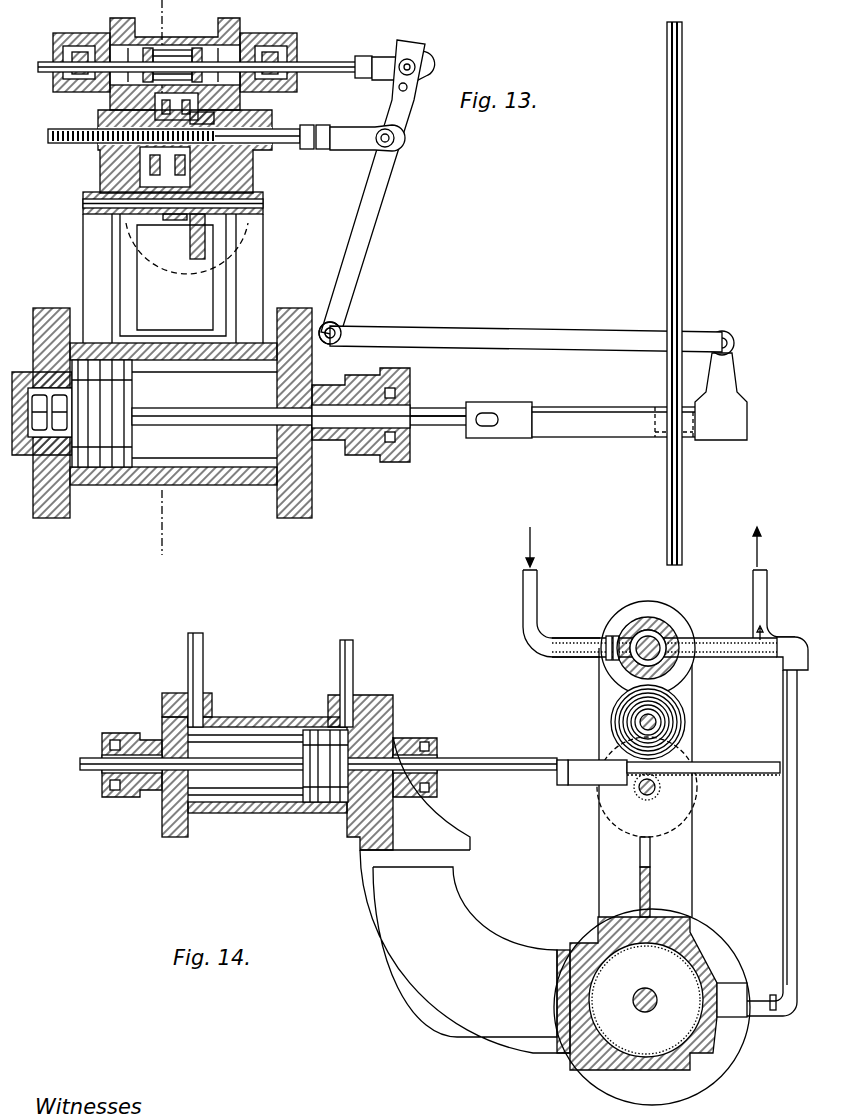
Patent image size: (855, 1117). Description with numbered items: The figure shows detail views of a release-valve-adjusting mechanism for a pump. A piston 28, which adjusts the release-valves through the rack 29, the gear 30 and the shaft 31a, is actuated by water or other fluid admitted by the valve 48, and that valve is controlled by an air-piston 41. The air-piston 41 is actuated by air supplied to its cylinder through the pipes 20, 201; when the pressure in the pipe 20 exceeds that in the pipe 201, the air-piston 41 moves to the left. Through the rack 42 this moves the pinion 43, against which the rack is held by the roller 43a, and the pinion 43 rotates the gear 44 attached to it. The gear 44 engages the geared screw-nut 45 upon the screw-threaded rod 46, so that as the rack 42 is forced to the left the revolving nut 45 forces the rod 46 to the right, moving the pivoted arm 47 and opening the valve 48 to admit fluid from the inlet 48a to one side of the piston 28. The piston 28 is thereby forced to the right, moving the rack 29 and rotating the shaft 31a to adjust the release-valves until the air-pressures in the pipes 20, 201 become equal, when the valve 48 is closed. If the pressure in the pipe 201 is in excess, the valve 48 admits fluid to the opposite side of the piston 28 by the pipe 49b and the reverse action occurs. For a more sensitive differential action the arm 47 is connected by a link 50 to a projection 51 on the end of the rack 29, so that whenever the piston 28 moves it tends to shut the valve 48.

In FIG. 13, the valve 48 is at (178, 45).
In FIG. 14, the valve 48 is at (668, 636).
In FIG. 13, the geared screw-nut 45 is at (212, 118).
In FIG. 13, the roller 43a is at (163, 165).
In FIG. 14, the roller 43a is at (687, 722).
In FIG. 13, the screw-threaded rod 46 is at (296, 150).
In FIG. 14, the screw-threaded rod 46 is at (640, 721).
In FIG. 13, the pinion 43 is at (176, 220).
In FIG. 14, the pinion 43 is at (633, 788).
In FIG. 13, the gear 44 is at (206, 250).
In FIG. 14, the gear 44 is at (665, 823).
In FIG. 13, the pivoted arm 47 is at (352, 263).
In FIG. 13, the piston 28 is at (138, 392).
In FIG. 13, the link 50 is at (442, 331).
In FIG. 13, the rack 29 is at (551, 414).
In FIG. 13, the projection 51 is at (721, 385).
In FIG. 13, the gear 30 is at (662, 436).
In FIG. 13, the shaft 31a is at (688, 172).
In FIG. 14, the pipe 201 is at (204, 663).
In FIG. 14, the pipe 20 is at (354, 670).
In FIG. 14, the air-piston 41 is at (327, 793).
In FIG. 14, the inlet 48a is at (562, 592).
In FIG. 14, the rack 42 is at (725, 767).
In FIG. 14, the pipe 49b is at (783, 912).